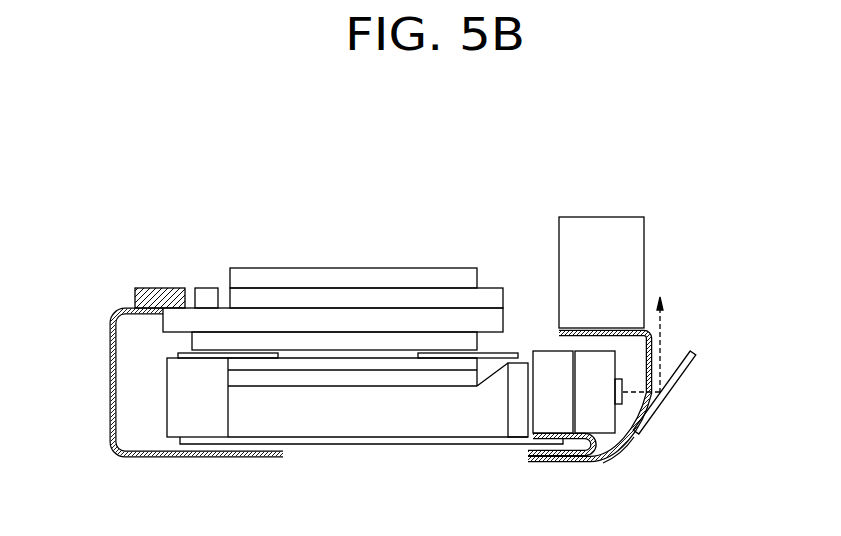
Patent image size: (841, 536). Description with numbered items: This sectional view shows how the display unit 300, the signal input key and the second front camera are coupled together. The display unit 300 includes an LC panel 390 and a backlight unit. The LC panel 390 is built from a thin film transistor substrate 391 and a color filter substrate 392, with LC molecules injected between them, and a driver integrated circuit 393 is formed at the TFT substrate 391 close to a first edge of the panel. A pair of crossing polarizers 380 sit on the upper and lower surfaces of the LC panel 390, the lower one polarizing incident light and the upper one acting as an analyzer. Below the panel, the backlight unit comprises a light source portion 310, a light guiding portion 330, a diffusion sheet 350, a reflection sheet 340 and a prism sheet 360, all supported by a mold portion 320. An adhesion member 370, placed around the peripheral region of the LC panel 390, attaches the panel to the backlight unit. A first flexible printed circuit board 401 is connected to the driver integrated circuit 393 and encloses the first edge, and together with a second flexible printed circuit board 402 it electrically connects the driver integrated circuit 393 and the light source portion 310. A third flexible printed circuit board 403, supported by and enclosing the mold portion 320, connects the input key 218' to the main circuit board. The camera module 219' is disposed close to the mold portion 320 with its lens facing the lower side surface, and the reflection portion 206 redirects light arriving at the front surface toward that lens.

The display unit 300 is at (153, 245).
The light source portion 310 is at (525, 418).
The mold portion 320 is at (198, 417).
The light guiding portion 330 is at (418, 412).
The reflection sheet 340 is at (377, 440).
The diffusion sheet 350 is at (338, 378).
The prism sheet 360 is at (302, 365).
The adhesion member 370 is at (172, 362).
The polarizers 380 is at (250, 340).
The LC panel 390 is at (340, 213).
The thin film transistor substrate 391 is at (397, 325).
The color filter substrate 392 is at (363, 300).
The driver integrated circuit 393 is at (207, 300).
The first flexible printed circuit board 401 is at (110, 408).
The second flexible printed circuit board 402 is at (593, 452).
The third flexible printed circuit board 403 is at (628, 435).
The reflection portion 206 is at (678, 377).
The input key 218' is at (645, 272).
The camera module 219' is at (665, 400).